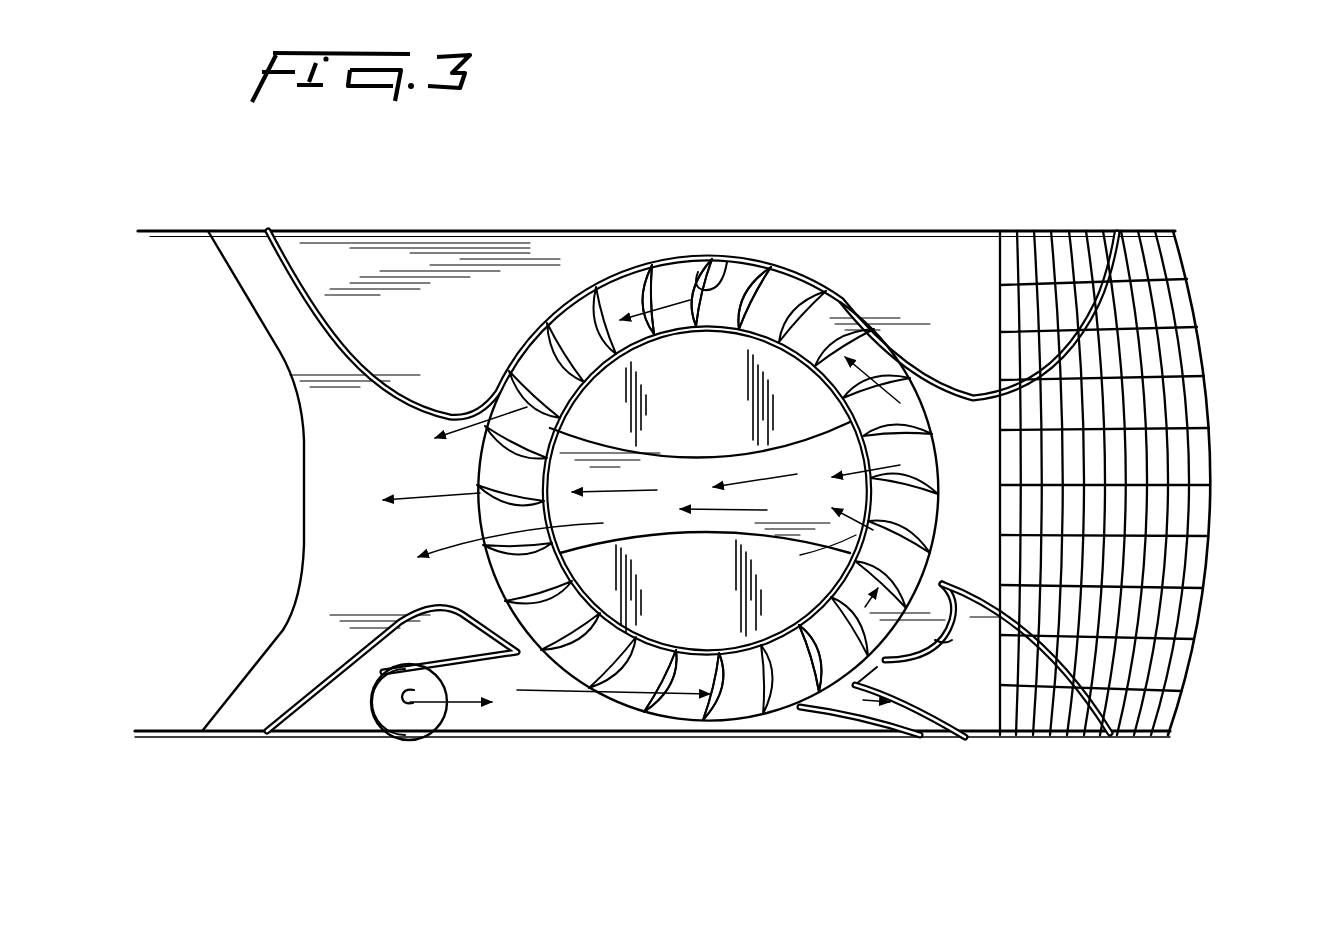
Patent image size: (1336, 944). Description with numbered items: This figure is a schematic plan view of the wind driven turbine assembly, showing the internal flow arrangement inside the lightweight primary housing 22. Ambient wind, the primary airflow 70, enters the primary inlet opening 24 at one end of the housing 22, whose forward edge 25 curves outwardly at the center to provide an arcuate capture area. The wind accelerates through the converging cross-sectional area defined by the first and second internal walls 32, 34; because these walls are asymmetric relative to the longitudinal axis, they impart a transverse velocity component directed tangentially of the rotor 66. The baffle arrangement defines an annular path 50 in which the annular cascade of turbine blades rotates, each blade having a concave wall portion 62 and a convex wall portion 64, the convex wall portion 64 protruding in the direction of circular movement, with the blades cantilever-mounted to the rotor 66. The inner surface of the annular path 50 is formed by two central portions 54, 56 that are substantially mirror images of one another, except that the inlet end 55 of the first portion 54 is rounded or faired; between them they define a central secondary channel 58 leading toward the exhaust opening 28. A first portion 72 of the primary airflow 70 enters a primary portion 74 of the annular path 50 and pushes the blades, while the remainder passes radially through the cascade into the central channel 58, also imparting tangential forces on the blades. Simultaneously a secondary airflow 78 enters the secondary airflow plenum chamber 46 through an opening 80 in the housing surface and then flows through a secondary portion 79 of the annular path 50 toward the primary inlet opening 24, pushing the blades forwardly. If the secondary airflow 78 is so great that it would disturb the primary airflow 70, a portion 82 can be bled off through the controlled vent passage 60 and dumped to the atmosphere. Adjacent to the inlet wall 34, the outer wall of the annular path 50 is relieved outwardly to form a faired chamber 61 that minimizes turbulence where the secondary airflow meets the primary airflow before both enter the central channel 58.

The primary housing 22 is at (596, 229).
The primary inlet opening 24 is at (1175, 563).
The forward edge of the primary inlet opening 25 is at (1208, 405).
The exhaust opening 28 is at (303, 545).
The first internal wall 32 is at (1098, 300).
The second internal wall 34 is at (1103, 715).
The secondary airflow plenum chamber 46 is at (510, 707).
The annular path 50 is at (667, 618).
The first portion of the central baffle part 54 is at (643, 703).
The inlet end of the first portion 55 is at (848, 564).
The second portion of the central baffle part 56 is at (608, 387).
The central secondary channel 58 is at (795, 470).
The controlled vent passage 60 is at (945, 733).
The chamber 61 is at (944, 648).
The concave wall portion 62 is at (727, 262).
The convex wall portion 64 is at (695, 283).
The rotor 66 is at (677, 705).
The primary airflow 70 is at (1090, 400).
The first portion of the primary airflow 72 is at (898, 405).
The primary portion of the annular path 74 is at (733, 280).
The secondary airflow 78 is at (407, 705).
The secondary portion of the annular path 79 is at (745, 703).
The opening 80 is at (443, 713).
The bled-off portion of the secondary airflow 82 is at (845, 718).